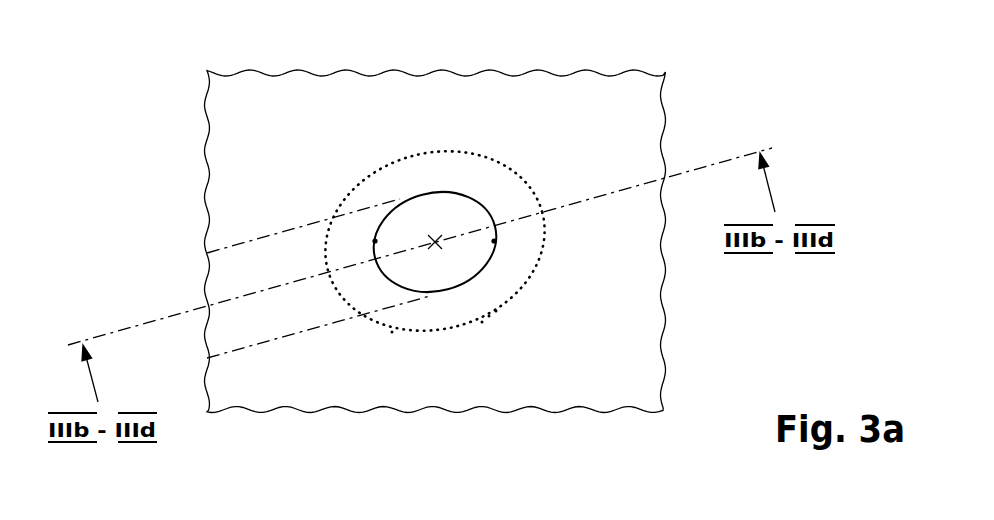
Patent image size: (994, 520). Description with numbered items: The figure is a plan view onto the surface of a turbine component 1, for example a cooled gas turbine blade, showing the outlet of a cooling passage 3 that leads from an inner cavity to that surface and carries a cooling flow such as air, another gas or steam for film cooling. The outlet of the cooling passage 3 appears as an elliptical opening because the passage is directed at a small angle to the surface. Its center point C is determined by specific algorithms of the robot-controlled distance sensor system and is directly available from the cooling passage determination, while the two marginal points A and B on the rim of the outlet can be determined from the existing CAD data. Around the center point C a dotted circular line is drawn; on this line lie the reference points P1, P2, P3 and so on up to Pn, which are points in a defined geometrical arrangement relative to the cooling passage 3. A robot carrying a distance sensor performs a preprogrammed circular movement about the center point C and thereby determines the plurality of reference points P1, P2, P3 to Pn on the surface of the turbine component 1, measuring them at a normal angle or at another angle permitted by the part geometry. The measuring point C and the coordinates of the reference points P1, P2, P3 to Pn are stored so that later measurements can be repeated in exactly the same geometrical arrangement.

The turbine component 1 is at (313, 128).
The cooling passage 3 is at (463, 192).
The marginal point A is at (361, 241).
The marginal point B is at (506, 241).
The center point C is at (435, 226).
The reference point Pn is at (392, 332).
The reference point P1 is at (482, 322).
The reference point P2 is at (489, 316).
The reference point P3 is at (496, 311).